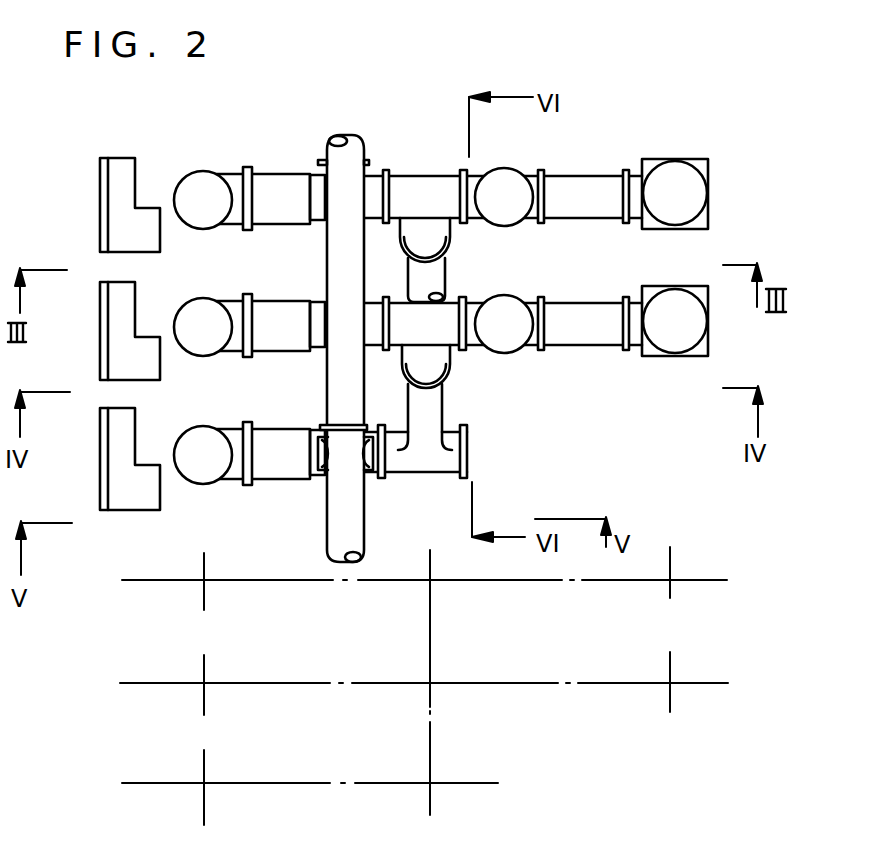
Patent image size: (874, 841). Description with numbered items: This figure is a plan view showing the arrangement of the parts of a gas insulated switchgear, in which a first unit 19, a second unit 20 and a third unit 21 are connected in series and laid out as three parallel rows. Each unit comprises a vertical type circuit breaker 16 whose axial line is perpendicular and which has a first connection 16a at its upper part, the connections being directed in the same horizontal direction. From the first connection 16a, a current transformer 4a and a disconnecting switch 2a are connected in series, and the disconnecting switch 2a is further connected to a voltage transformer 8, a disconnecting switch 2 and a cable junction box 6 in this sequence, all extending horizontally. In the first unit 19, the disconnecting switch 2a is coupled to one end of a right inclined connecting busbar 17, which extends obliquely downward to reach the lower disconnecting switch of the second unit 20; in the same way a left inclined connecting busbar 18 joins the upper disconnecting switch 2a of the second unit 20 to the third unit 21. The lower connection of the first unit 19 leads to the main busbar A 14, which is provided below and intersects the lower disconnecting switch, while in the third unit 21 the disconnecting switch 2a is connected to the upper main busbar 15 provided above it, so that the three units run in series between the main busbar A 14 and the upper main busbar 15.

The disconnecting switch 2 is at (599, 218).
The disconnecting switch 2a is at (387, 222).
The current transformer 4a is at (287, 173).
The cable junction box 6 is at (675, 280).
The voltage transformer 8 is at (513, 223).
The main busbar A 14 is at (338, 519).
The upper main busbar 15 is at (365, 510).
The vertical type circuit breaker 16 is at (210, 171).
The first connection 16a is at (246, 168).
The right inclined connecting busbar 17 is at (445, 262).
The left inclined connecting busbar 18 is at (448, 392).
The first unit 19 is at (752, 187).
The second unit 20 is at (741, 326).
The third unit 21 is at (496, 445).